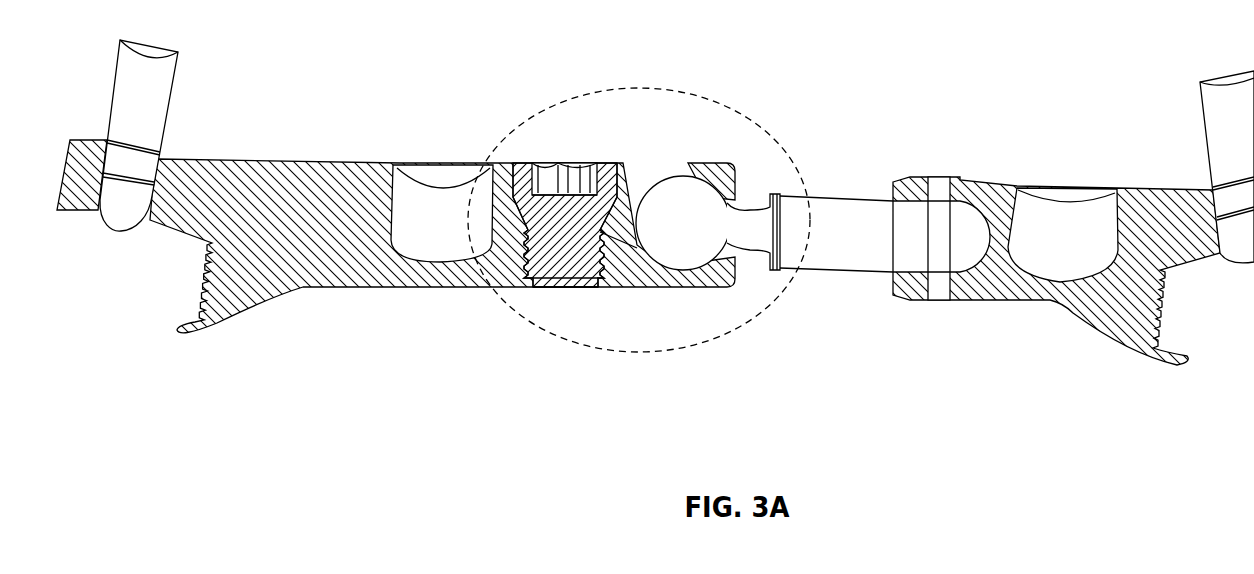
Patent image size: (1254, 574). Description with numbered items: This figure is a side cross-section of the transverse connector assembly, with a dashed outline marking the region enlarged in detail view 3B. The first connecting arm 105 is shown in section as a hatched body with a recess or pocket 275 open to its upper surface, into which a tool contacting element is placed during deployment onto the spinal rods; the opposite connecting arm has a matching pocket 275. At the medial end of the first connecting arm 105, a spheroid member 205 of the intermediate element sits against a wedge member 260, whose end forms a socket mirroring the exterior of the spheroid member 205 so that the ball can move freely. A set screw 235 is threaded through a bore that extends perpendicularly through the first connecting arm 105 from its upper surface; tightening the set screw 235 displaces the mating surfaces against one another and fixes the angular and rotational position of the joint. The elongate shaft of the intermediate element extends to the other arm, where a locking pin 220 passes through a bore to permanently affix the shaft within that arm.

The first connecting arm 105 is at (277, 199).
The pocket 275 is at (437, 214).
The set screw 235 is at (580, 279).
The wedge member 260 is at (648, 178).
The spheroid member 205 is at (692, 243).
The locking pin 220 is at (943, 187).
The detail view boundary 3B is at (708, 98).